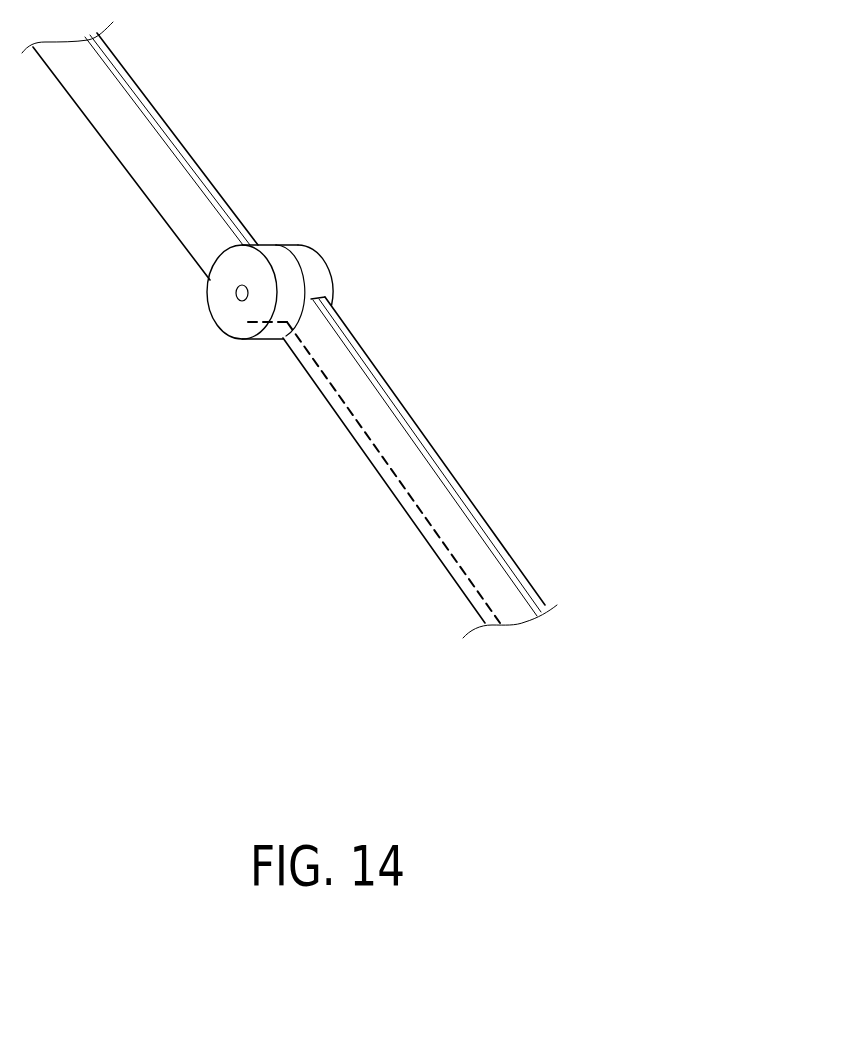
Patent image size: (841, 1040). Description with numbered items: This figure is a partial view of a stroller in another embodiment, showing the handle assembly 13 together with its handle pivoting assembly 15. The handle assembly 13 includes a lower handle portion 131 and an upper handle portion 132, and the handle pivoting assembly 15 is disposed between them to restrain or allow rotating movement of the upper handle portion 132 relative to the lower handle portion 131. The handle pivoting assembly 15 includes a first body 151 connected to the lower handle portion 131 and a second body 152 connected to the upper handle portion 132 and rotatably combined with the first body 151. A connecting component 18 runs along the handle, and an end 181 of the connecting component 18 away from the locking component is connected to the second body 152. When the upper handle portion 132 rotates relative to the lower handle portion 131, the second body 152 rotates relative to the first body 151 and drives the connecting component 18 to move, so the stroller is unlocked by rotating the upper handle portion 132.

The handle assembly 13 is at (372, 330).
The lower handle portion 131 is at (460, 547).
The upper handle portion 132 is at (143, 147).
The handle pivoting assembly 15 is at (402, 236).
The first body 151 is at (315, 267).
The second body 152 is at (283, 263).
The connecting component 18 is at (393, 472).
The end of the connecting component 181 is at (243, 363).